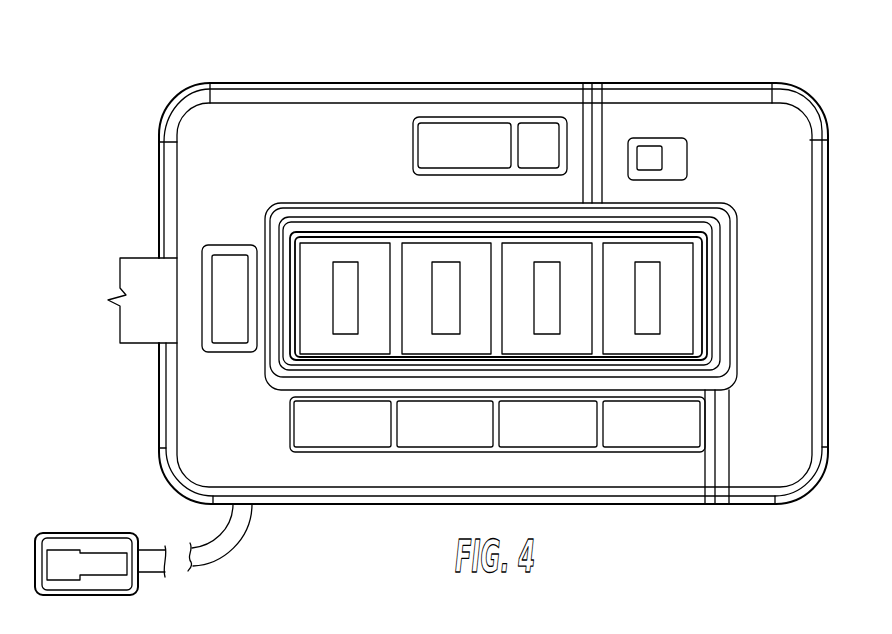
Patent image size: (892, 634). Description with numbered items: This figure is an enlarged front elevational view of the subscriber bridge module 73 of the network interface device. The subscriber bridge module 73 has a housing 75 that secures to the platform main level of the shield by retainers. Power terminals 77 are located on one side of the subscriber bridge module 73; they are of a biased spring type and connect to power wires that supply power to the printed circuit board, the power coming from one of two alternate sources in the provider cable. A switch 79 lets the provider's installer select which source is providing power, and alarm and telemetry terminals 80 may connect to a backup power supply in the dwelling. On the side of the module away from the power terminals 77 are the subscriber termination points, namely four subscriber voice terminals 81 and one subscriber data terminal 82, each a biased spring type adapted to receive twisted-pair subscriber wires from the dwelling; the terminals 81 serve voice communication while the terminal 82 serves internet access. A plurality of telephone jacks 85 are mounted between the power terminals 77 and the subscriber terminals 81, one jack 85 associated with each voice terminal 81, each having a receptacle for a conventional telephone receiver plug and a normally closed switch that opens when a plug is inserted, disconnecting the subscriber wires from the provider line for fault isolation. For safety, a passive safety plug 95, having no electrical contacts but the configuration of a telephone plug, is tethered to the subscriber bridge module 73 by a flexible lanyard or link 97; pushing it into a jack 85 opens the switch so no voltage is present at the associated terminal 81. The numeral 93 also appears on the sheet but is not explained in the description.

The subscriber bridge module 73 is at (677, 57).
The housing 75 is at (730, 82).
The power terminals 77 is at (540, 140).
The switch 79 is at (650, 157).
The alarm and telemetry terminals 80 is at (436, 142).
The subscriber voice terminals 81 is at (442, 427).
The subscriber data terminal 82 is at (230, 325).
The telephone jacks 85 is at (677, 293).
The cable 93 is at (660, 620).
The safety plug 95 is at (100, 580).
The flexible lanyard or link 97 is at (227, 544).